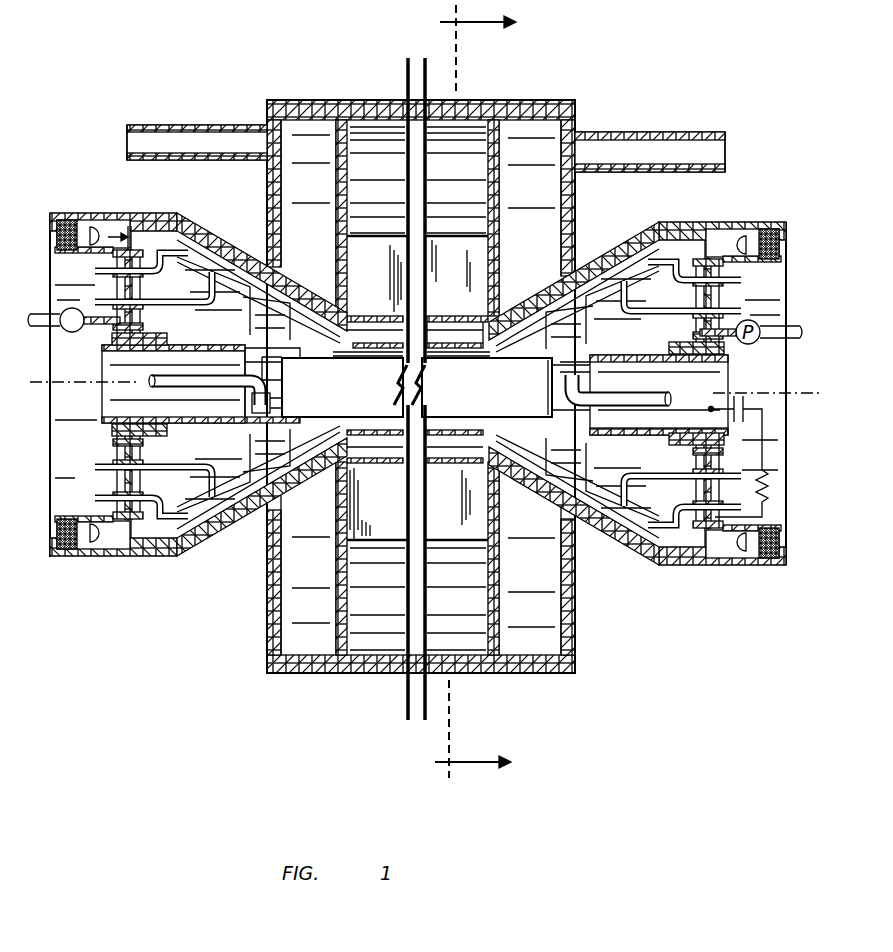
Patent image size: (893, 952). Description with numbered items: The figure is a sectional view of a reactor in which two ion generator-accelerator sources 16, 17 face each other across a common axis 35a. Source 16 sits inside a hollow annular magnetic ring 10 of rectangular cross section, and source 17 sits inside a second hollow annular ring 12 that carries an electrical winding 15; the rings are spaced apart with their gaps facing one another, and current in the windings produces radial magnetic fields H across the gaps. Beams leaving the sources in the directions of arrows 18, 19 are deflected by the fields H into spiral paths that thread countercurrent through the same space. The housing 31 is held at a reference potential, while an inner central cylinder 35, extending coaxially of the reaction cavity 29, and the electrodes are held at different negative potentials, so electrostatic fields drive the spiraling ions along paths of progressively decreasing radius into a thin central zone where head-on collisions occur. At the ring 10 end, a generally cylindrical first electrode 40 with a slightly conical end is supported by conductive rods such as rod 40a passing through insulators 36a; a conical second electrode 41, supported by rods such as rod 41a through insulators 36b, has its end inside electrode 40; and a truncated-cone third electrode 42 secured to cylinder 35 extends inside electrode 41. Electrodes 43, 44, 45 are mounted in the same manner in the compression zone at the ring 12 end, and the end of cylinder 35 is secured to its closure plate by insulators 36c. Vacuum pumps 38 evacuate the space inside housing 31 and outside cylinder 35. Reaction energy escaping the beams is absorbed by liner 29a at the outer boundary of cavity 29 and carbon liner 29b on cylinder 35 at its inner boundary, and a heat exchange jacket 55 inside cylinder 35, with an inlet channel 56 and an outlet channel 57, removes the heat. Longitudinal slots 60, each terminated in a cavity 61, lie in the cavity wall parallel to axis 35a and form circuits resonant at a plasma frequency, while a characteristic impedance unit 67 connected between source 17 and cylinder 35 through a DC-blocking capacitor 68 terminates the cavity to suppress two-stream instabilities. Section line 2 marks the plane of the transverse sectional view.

The section line 2 is at (481, 393).
The hollow annular magnetic ring 10 is at (58, 213).
The second hollow annular ring 12 is at (762, 222).
The electrical winding 15 is at (786, 236).
The ion generator-accelerator source 16 is at (80, 213).
The ion generator-accelerator source 17 is at (752, 229).
The arrow 18 is at (116, 213).
The arrow 19 is at (727, 229).
The reaction cavity 29 is at (382, 333).
The liner 29a is at (452, 337).
The carbon liner 29b is at (462, 337).
The housing 31 is at (320, 100).
The inner central cylinder 35 is at (150, 420).
The axis 35a is at (122, 384).
The insulators 36a is at (97, 273).
The insulators 36b is at (97, 302).
The insulators 36c is at (85, 370).
The vacuum pumps 38 is at (84, 330).
The first electrode 40 is at (172, 540).
The supporting rod 40a is at (200, 236).
The second electrode 41 is at (222, 505).
The supporting rod 41a is at (208, 297).
The third electrode 42 is at (300, 455).
The electrode 43 is at (660, 252).
The electrode 44 is at (605, 285).
The electrode 45 is at (517, 341).
The heat exchange jacket 55 is at (353, 359).
The inlet channel 56 is at (552, 382).
The outlet channel 57 is at (282, 403).
The slot 60 is at (387, 262).
The cavity 61 is at (383, 192).
The characteristic impedance unit 67 is at (768, 483).
The capacitor 68 is at (748, 393).
The radial magnetic fields H is at (150, 213).